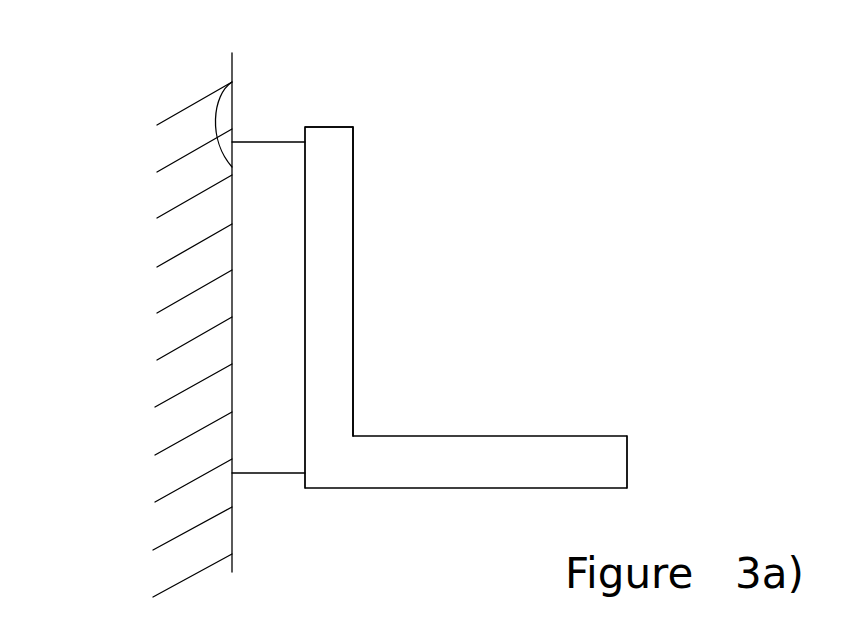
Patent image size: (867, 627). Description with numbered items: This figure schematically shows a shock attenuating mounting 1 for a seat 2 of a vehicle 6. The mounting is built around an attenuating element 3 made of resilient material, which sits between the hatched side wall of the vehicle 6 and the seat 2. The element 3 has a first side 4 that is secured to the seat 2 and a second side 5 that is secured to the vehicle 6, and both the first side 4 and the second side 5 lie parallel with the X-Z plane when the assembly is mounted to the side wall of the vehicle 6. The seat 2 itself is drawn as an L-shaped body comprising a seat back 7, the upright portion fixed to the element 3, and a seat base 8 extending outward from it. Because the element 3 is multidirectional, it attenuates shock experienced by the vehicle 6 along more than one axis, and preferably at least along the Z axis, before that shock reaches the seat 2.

The shock attenuating mounting 1 is at (528, 98).
The seat 2 is at (483, 415).
The attenuating element 3 is at (270, 165).
The first side 4 is at (305, 195).
The second side 5 is at (232, 82).
The vehicle 6 is at (178, 242).
The seat back 7 is at (335, 233).
The seat base 8 is at (613, 467).